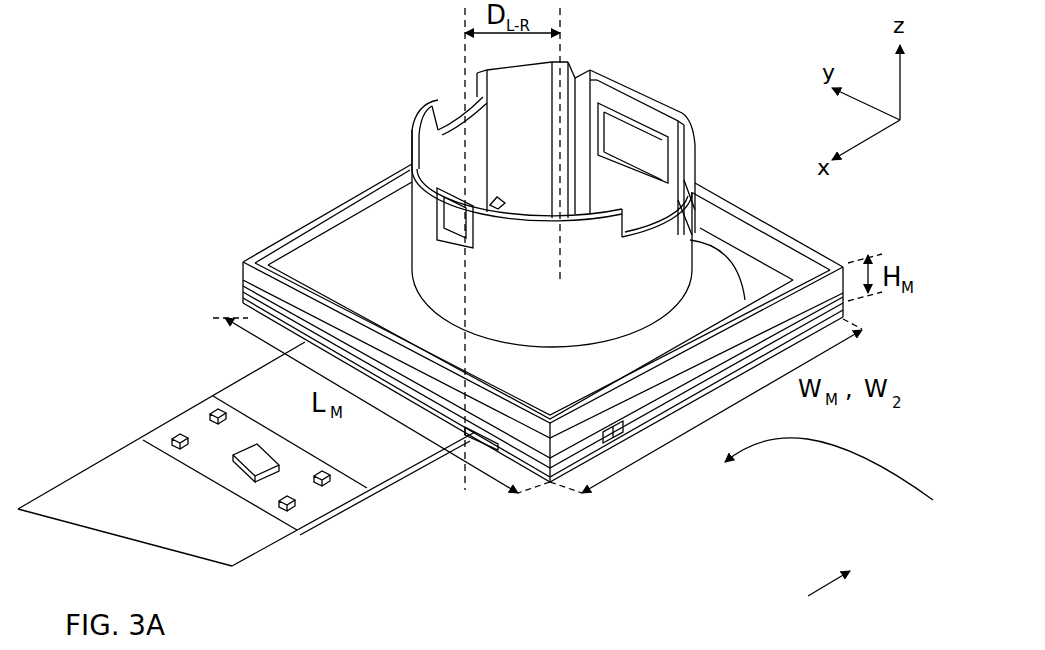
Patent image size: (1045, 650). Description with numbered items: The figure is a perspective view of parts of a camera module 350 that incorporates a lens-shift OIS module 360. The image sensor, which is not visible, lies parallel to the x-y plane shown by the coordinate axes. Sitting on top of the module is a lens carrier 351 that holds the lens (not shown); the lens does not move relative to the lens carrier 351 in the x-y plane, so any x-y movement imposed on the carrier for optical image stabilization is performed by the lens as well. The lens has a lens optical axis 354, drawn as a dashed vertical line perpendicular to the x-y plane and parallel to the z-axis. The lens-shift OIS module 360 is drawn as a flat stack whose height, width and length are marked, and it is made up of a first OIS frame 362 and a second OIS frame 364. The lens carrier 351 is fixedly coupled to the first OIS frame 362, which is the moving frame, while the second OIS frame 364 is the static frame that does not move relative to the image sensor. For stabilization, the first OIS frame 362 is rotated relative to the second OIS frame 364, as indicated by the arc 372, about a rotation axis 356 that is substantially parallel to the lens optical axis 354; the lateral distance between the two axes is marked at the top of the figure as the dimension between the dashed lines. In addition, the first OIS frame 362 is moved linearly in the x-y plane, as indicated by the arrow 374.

The camera module 350 is at (211, 58).
The lens carrier 351 is at (642, 80).
The lens optical axis 354 is at (567, 50).
The rotation axis 356 is at (462, 88).
The lens-shift OIS module 360 is at (353, 177).
The first OIS frame 362 is at (358, 242).
The second OIS frame 364 is at (240, 262).
The arc 372 is at (830, 457).
The arrow 374 is at (798, 588).